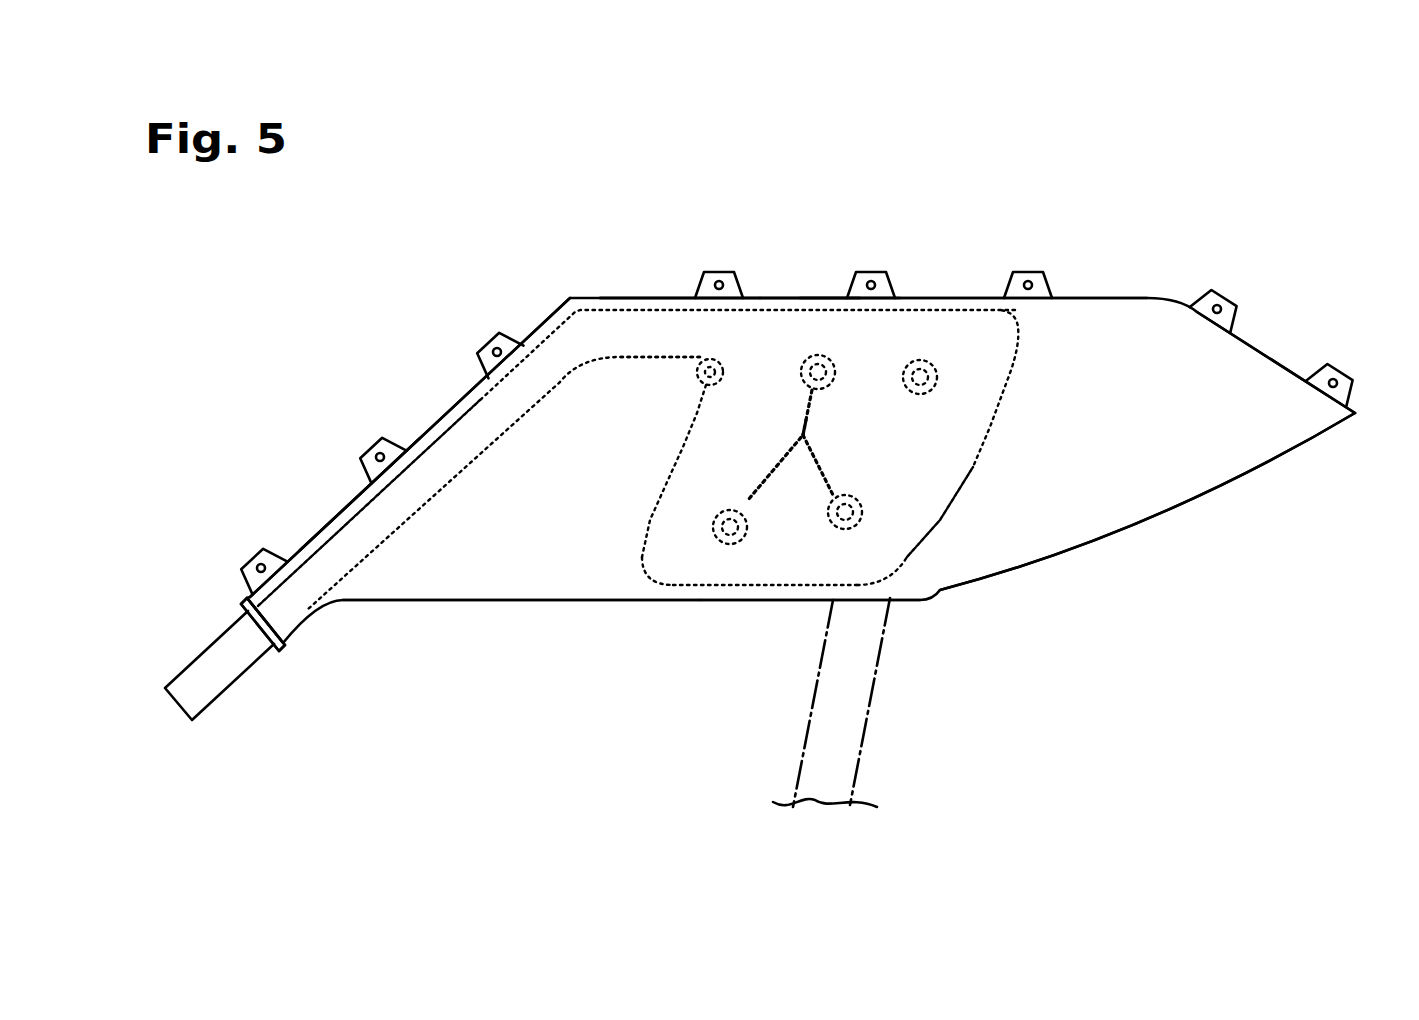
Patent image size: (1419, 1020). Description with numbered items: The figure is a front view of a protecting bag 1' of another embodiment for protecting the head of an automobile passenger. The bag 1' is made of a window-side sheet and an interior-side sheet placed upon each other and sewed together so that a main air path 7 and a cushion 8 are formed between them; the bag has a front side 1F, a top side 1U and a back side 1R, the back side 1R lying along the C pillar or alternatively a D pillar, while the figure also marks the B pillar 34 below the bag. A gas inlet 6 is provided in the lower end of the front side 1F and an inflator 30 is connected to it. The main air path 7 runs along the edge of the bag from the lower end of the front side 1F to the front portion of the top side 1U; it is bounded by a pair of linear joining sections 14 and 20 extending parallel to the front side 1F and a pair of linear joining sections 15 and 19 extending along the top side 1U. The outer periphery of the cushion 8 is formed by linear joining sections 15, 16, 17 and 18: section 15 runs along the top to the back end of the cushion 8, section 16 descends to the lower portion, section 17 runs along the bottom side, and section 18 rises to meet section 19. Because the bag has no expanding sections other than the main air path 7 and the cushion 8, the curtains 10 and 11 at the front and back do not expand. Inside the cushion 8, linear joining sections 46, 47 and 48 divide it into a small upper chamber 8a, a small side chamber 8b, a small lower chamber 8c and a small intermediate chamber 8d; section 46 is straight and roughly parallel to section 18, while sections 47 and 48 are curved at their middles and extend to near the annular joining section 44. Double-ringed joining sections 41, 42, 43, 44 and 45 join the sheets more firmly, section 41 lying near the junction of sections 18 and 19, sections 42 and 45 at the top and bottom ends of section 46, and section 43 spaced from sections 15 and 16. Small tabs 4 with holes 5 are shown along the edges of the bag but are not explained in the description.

The protecting bag 1' is at (798, 381).
The top side 1U is at (962, 292).
The front side 1F is at (447, 400).
The back side 1R is at (1280, 355).
The mounting tab 4 is at (733, 272).
The mounting hole 5 is at (1042, 276).
The gas inlet 6 is at (264, 658).
The main air path 7 is at (655, 330).
The cushion 8 is at (786, 335).
The small upper chamber 8a is at (818, 322).
The small side chamber 8b is at (958, 460).
The small lower chamber 8c is at (750, 573).
The small intermediate chamber 8d is at (707, 462).
The curtain 10 is at (538, 545).
The curtain 11 is at (1147, 478).
The linear joining section 14 is at (425, 455).
The linear joining section 15 is at (610, 312).
The linear joining section 16 is at (993, 423).
The linear joining section 17 is at (708, 592).
The linear joining section 18 is at (658, 493).
The linear joining section 19 is at (632, 358).
The linear joining section 20 is at (453, 478).
The inflator 30 is at (207, 687).
The B pillar 34 is at (870, 707).
The double-ringed joining section 41 is at (697, 378).
The double-ringed joining section 42 is at (846, 330).
The double-ringed joining section 43 is at (955, 337).
The double-ringed joining section 44 is at (888, 480).
The double-ringed joining section 45 is at (712, 533).
The linear joining section 46 is at (768, 443).
The linear joining section 47 is at (823, 453).
The linear joining section 48 is at (790, 450).